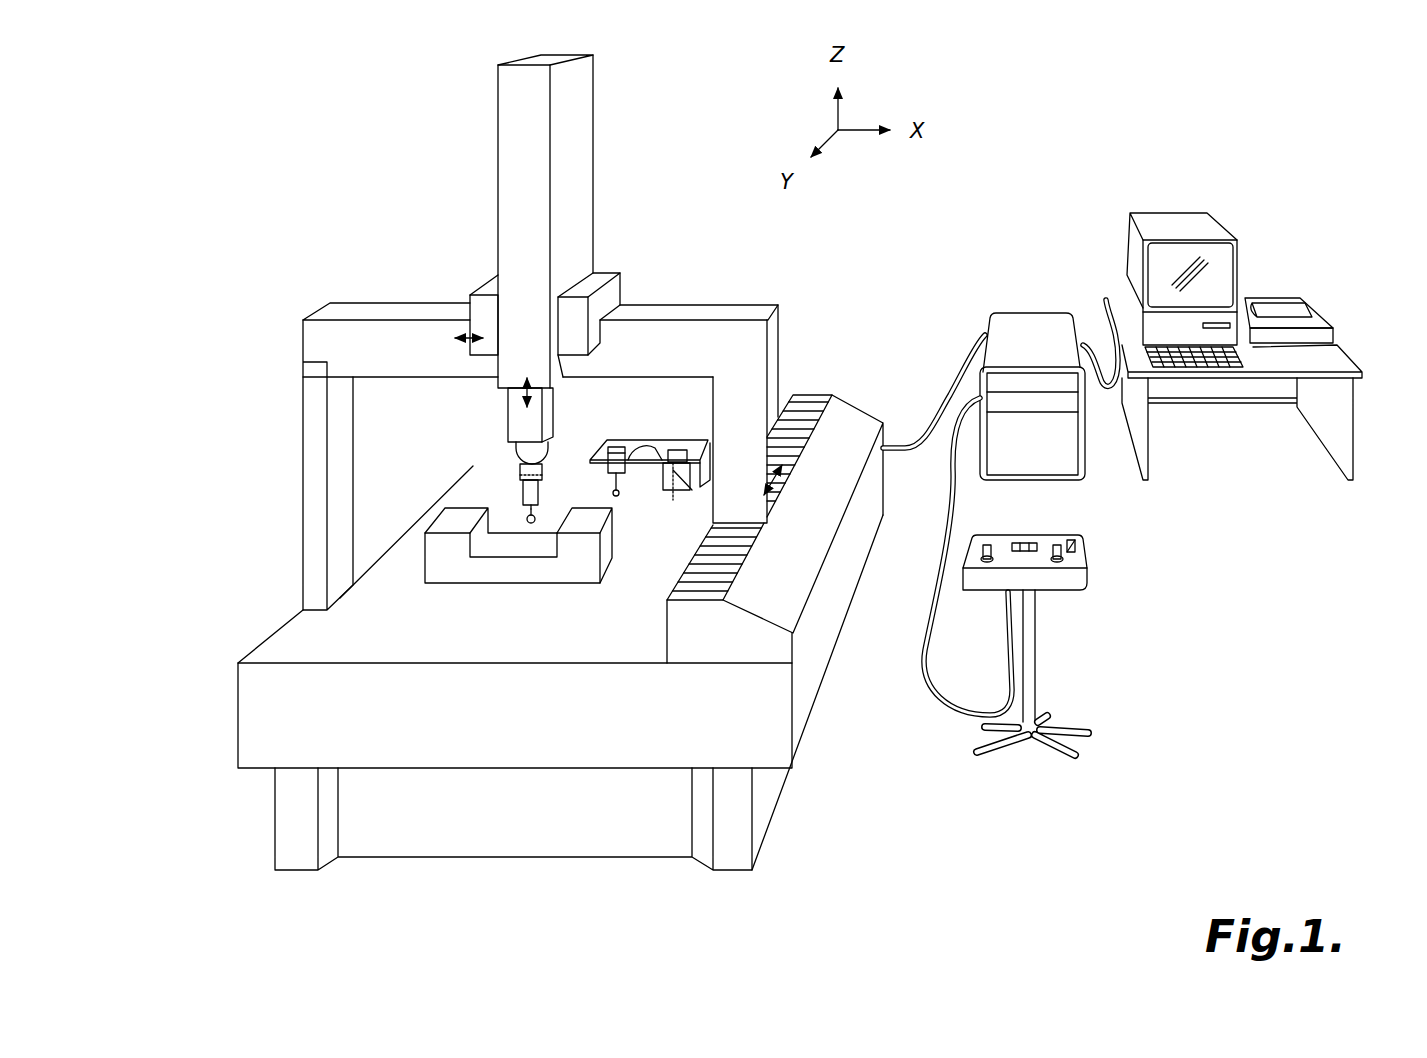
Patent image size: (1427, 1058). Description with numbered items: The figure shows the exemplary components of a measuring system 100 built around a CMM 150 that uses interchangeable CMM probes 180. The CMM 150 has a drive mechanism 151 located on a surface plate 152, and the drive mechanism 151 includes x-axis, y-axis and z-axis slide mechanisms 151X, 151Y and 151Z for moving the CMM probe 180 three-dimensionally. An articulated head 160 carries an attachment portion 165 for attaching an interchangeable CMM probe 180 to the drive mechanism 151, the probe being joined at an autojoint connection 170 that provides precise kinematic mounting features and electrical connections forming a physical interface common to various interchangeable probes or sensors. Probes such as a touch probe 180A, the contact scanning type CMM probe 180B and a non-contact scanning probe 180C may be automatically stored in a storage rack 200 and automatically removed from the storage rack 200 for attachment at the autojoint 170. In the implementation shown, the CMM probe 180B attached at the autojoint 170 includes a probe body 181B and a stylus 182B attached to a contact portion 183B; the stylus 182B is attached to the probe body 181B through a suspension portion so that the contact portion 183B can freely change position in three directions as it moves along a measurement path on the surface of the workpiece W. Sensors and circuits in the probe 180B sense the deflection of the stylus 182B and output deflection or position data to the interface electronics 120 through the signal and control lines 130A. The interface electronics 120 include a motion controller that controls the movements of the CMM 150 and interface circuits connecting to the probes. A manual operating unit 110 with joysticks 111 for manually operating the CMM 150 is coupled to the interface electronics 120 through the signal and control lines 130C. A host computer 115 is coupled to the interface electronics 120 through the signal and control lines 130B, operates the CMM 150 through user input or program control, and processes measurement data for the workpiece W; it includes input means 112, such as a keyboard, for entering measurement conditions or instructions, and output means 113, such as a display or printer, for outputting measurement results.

The measuring system 100 is at (1040, 93).
The manual operating unit 110 is at (1091, 583).
The joysticks 111 is at (1060, 544).
The input means 112 is at (1228, 368).
The output means 113 is at (1320, 322).
The host computer 115 is at (1288, 275).
The interface electronics 120 is at (1033, 320).
The signal and control lines 130A is at (978, 335).
The signal and control lines 130B is at (1118, 300).
The signal and control lines 130C is at (960, 488).
The CMM 150 is at (250, 236).
The drive mechanism 151 is at (446, 263).
The x-axis slide mechanism 151X is at (478, 335).
The y-axis slide mechanism 151Y is at (768, 496).
The z-axis slide mechanism 151Z is at (517, 377).
The surface plate 152 is at (238, 712).
The articulated head 160 is at (511, 450).
The attachment portion 165 is at (518, 480).
The autojoint connection 170 is at (522, 490).
The interchangeable CMM probe 180 is at (777, 210).
The touch probe 180A is at (627, 437).
The contact scanning type CMM probe 180B is at (560, 488).
The non-contact scanning probe 180C is at (681, 437).
The probe body 181B is at (523, 503).
The stylus 182B is at (528, 512).
The contact portion 183B is at (529, 520).
The storage rack 200 is at (712, 452).
The workpiece W is at (605, 543).